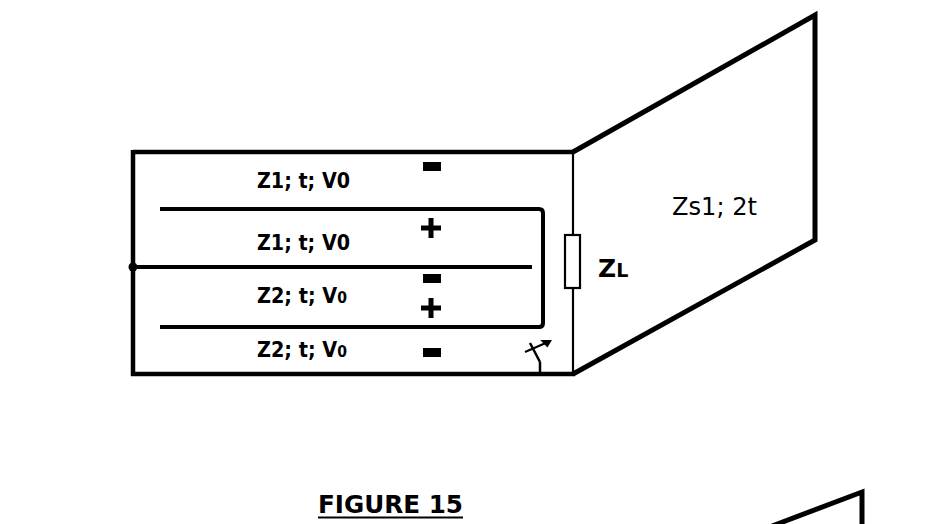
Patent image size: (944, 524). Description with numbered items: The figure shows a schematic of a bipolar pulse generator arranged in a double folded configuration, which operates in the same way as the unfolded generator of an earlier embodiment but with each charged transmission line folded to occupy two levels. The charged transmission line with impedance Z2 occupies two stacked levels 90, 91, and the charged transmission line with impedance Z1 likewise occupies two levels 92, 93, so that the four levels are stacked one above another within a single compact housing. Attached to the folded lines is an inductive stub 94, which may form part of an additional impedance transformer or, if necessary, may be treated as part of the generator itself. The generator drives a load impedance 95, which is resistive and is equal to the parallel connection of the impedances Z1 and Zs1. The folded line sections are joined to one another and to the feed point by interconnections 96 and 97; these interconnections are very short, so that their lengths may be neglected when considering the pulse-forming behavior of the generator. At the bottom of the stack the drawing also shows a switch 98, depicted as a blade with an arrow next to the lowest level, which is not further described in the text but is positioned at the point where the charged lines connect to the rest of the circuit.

The first level of charged transmission line with impedance Z2 90 is at (225, 362).
The second level of charged transmission line with impedance Z2 91 is at (363, 312).
The first level of charged transmission line with impedance Z1 92 is at (175, 228).
The second level of charged transmission line with impedance Z1 93 is at (213, 180).
The inductive stub 94 is at (740, 95).
The load impedance 95 is at (587, 283).
The interconnection 96 is at (540, 253).
The interconnection 97 is at (130, 242).
The switch 98 is at (539, 390).